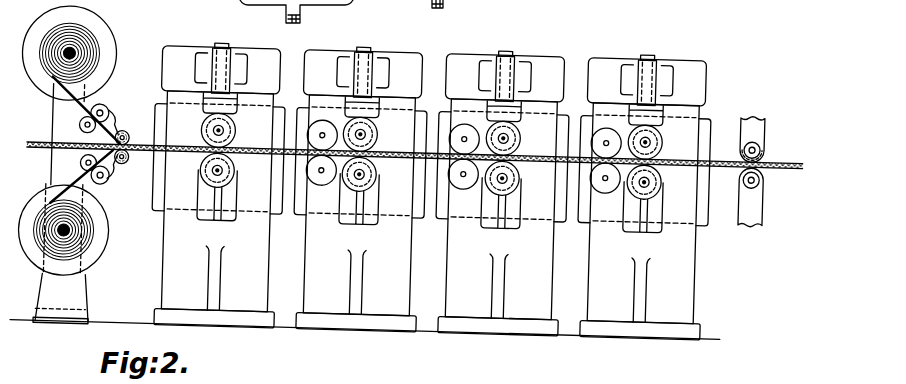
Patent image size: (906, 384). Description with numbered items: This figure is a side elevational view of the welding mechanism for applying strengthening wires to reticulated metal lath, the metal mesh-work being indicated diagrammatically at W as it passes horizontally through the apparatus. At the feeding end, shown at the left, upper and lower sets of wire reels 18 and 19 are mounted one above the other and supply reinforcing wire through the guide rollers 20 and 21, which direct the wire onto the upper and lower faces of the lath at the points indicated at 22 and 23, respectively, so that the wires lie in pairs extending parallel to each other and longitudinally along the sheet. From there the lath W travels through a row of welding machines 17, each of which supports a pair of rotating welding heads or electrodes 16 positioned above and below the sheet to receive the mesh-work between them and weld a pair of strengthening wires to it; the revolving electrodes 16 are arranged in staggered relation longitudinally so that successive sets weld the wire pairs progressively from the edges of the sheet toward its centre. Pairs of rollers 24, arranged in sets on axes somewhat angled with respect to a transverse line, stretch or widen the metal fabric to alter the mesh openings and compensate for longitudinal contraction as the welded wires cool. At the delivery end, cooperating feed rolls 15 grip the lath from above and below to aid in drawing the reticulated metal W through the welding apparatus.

The feed rolls 15 is at (763, 127).
The rotating welding heads or electrodes 16 is at (201, 165).
The welding machines 17 is at (431, 191).
The upper set of wire reels 18 is at (69, 26).
The lower set of wire reels 19 is at (91, 241).
The guide rollers 20 is at (106, 105).
The guide rollers 21 is at (127, 130).
The upper face of the lath 22 is at (147, 167).
The lower face of the lath 23 is at (128, 144).
The pairs of rollers 24 is at (450, 120).
The reticulated metal W is at (726, 153).